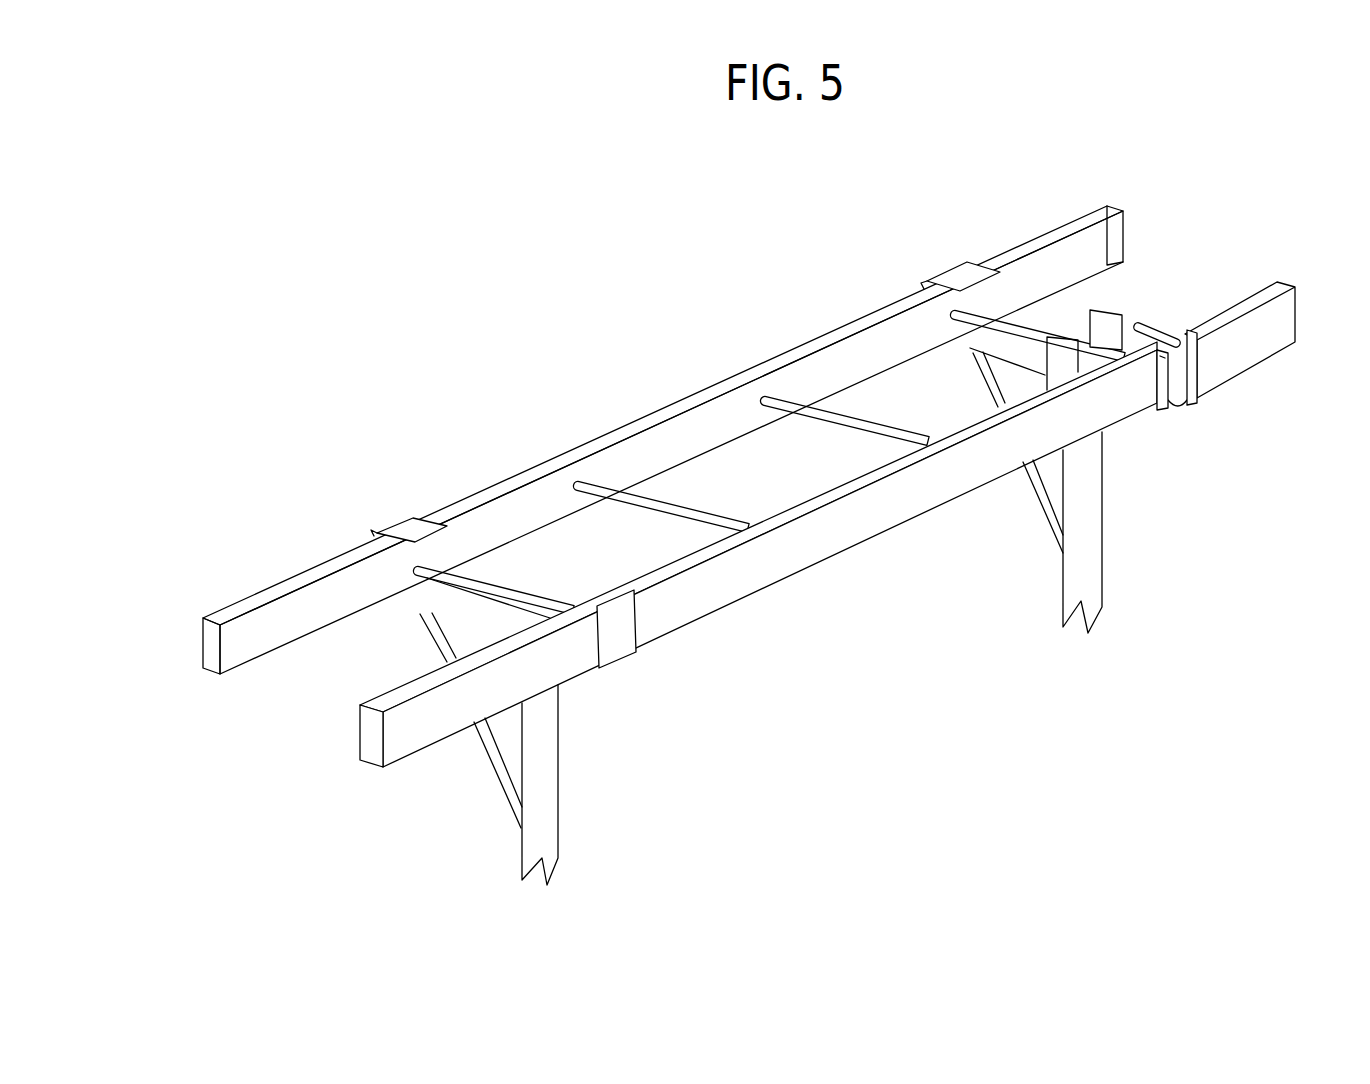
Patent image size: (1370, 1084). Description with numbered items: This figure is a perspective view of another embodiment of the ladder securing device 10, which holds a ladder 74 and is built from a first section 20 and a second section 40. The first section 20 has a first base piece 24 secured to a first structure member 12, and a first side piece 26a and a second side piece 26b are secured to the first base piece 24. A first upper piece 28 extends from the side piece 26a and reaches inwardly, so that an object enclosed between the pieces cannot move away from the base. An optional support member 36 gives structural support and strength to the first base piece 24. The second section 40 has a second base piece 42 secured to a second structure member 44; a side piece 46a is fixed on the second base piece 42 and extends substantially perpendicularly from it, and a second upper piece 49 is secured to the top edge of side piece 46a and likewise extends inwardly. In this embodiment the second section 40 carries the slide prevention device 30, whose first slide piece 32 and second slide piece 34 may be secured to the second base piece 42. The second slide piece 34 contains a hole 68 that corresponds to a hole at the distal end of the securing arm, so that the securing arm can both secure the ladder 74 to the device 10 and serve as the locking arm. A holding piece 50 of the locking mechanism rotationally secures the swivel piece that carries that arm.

The ladder securing device 10 is at (558, 284).
The first structure member 12 is at (534, 807).
The first section 20 is at (477, 809).
The first base piece 24 is at (420, 613).
The first side piece 26a is at (377, 533).
The second side piece 26b is at (617, 643).
The first upper piece 28 is at (417, 528).
The slide prevention device 30 is at (1107, 291).
The first slide piece 32 is at (1060, 345).
The second slide piece 34 is at (1110, 333).
The support member 36 is at (1145, 322).
The second section 40 is at (1026, 534).
The second base piece 42 is at (1000, 373).
The second structure member 44 is at (1083, 532).
The first side piece 46a is at (921, 287).
The second upper piece 49 is at (961, 277).
The holding piece 50 is at (1182, 367).
The hole 68 is at (1110, 335).
The ladder 74 is at (647, 422).